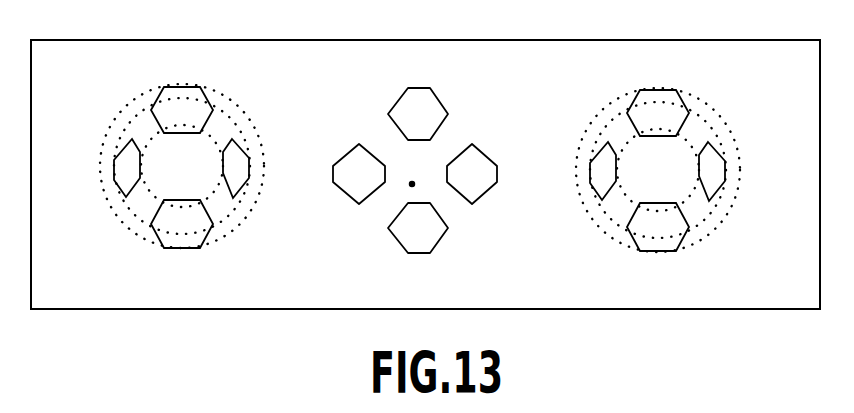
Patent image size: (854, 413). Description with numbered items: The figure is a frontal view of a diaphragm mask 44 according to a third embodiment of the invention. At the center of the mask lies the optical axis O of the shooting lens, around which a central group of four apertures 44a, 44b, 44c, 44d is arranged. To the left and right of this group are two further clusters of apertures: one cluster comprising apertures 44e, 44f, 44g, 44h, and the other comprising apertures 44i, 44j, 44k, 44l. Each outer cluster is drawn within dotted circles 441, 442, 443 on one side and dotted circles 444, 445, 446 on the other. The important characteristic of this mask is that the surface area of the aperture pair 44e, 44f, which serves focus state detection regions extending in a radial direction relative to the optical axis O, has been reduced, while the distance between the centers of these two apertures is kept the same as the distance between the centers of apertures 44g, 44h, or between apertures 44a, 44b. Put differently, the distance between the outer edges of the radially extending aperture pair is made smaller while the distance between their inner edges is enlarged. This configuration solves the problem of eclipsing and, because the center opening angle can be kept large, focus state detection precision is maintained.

The diaphragm mask 44 is at (660, 310).
The aperture 44a is at (335, 183).
The aperture 44b is at (488, 153).
The aperture 44c is at (440, 98).
The aperture 44d is at (397, 237).
The aperture 44e is at (113, 170).
The aperture 44f is at (243, 150).
The aperture 44g is at (163, 95).
The aperture 44h is at (162, 238).
The aperture 44i is at (590, 172).
The aperture 44j is at (718, 153).
The aperture 44k is at (638, 103).
The aperture 44l is at (637, 242).
The outer dotted circle 441 is at (122, 220).
The middle dotted circle 442 is at (233, 212).
The inner dotted circle 443 is at (152, 137).
The outer dotted circle 444 is at (735, 185).
The middle dotted circle 445 is at (707, 215).
The inner dotted circle 446 is at (627, 142).
The optical axis O is at (420, 172).